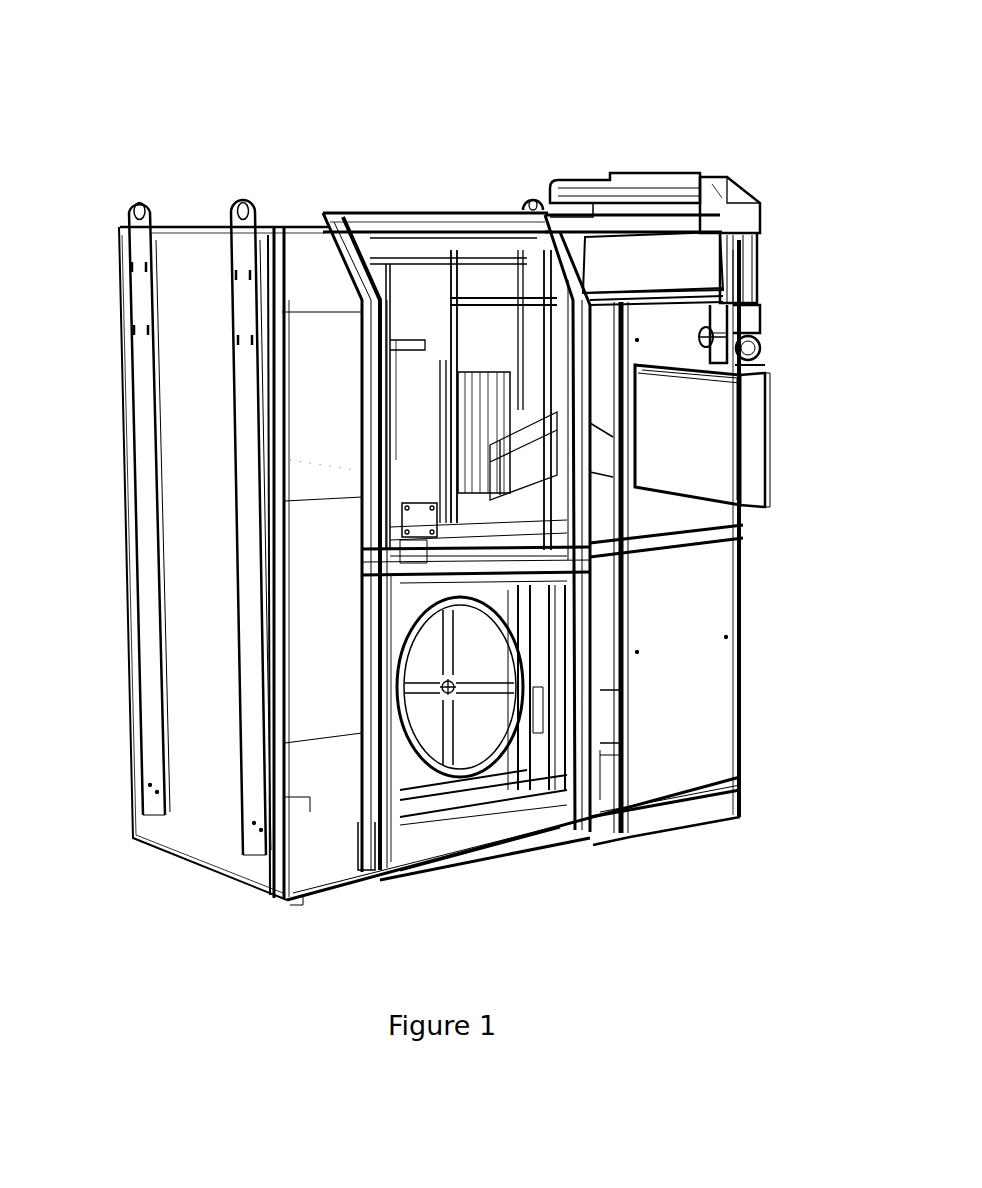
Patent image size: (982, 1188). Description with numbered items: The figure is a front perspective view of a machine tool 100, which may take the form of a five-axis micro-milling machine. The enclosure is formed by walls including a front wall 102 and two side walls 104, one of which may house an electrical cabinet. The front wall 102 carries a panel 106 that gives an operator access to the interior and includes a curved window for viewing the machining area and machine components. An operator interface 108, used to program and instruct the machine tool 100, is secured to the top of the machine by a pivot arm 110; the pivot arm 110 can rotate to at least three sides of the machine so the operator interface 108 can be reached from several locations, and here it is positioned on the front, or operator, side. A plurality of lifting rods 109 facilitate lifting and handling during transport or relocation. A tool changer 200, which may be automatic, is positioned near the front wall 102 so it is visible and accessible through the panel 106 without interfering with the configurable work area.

The machine tool 100 is at (636, 96).
The front wall 102 is at (663, 772).
The side wall 104 is at (185, 580).
The panel 106 is at (435, 213).
The operator interface 108 is at (713, 472).
The lifting rod 109 is at (138, 197).
The pivot arm 110 is at (653, 183).
The tool changer 200 is at (452, 703).